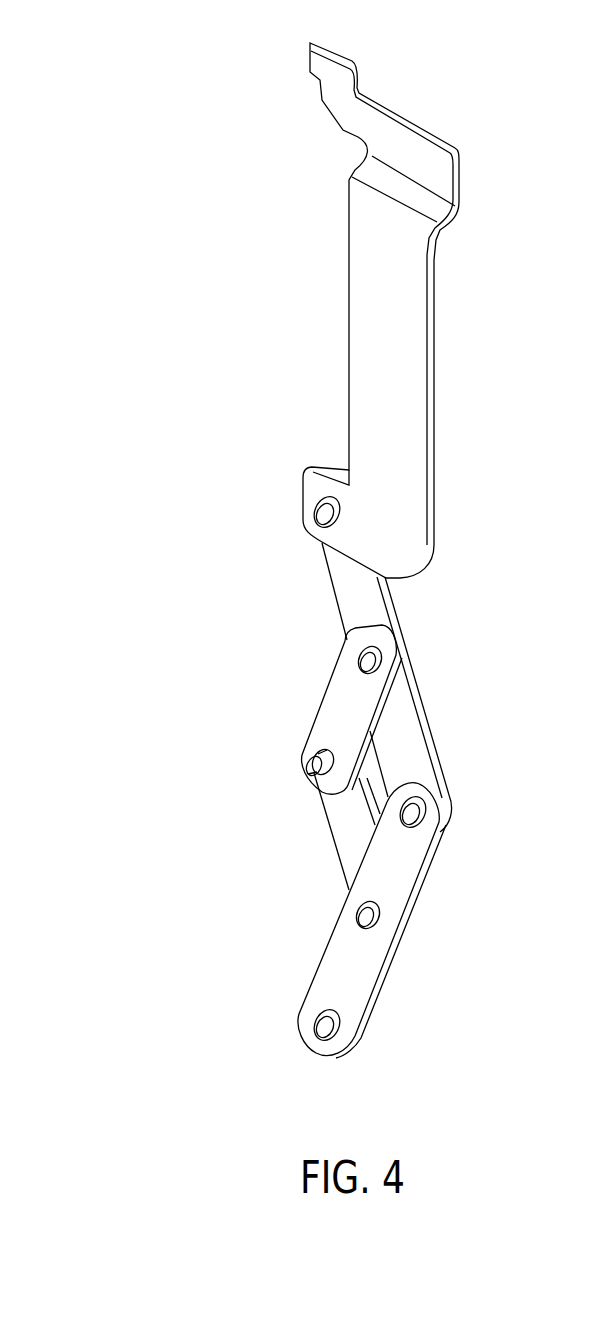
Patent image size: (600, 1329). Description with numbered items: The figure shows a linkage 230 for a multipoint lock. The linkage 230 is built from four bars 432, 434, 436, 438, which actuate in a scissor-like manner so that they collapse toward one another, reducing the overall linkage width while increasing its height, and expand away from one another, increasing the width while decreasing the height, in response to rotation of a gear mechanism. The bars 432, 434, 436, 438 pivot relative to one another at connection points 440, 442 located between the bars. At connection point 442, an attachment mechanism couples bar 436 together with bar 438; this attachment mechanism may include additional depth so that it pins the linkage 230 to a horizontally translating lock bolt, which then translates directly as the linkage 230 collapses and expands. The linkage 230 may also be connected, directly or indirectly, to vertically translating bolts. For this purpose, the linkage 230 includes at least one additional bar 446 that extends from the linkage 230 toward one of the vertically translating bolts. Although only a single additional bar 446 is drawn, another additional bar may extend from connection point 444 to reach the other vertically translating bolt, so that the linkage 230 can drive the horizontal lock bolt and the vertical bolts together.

The linkage 230 is at (170, 99).
The additional bar 446 is at (410, 408).
The bar 438 is at (407, 743).
The bar 434 is at (337, 710).
The connection point 440 is at (312, 768).
The bar 432 is at (337, 853).
The bar 436 is at (378, 928).
The connection point 442 is at (446, 830).
The connection point 444 is at (338, 1035).